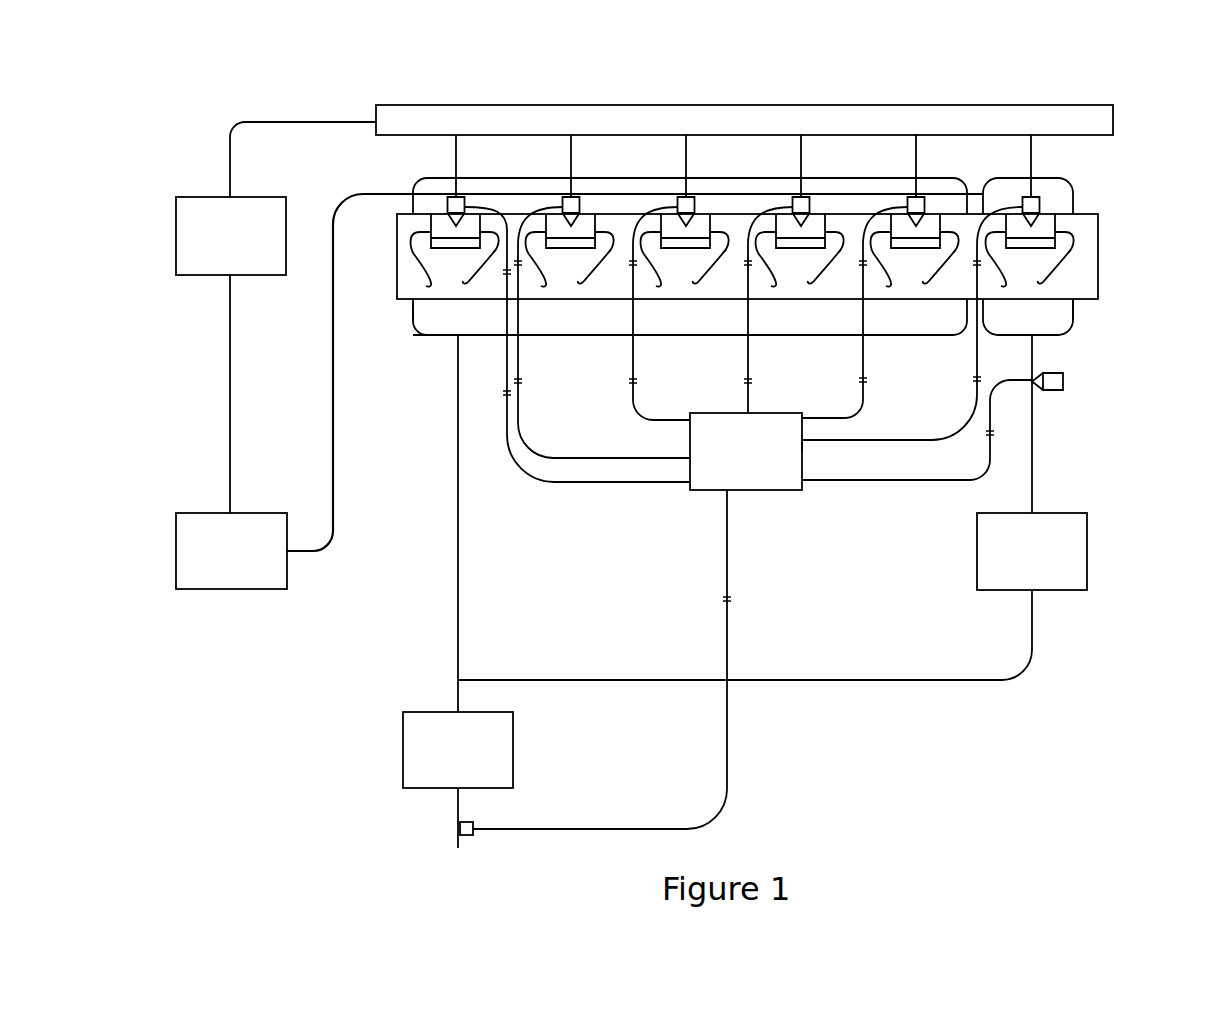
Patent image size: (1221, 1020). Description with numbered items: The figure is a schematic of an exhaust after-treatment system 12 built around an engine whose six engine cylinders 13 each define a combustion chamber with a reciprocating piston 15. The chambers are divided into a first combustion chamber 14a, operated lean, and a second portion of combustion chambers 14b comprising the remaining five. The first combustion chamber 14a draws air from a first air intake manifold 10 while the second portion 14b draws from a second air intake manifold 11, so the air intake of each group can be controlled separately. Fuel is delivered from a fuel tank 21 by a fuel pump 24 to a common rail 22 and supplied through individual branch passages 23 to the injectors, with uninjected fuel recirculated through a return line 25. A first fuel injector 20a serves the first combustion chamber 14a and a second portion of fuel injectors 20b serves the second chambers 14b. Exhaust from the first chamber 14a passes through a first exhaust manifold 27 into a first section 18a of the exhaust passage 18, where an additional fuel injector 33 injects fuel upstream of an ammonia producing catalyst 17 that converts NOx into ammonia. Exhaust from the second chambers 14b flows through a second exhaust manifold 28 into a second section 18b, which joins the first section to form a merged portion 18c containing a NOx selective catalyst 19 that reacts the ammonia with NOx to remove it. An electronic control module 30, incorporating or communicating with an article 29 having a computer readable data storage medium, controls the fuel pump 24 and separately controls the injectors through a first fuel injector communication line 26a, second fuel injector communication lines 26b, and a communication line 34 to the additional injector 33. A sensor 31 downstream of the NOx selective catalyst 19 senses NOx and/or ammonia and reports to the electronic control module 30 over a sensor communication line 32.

The first air intake manifold 10 is at (1073, 205).
The second air intake manifold 11 is at (413, 192).
The exhaust after-treatment system 12 is at (1116, 72).
The engine cylinder 13 is at (705, 264).
The first combustion chamber 14a is at (1057, 264).
The second portion of combustion chambers 14b is at (713, 264).
The piston 15 is at (743, 245).
The ammonia producing catalyst 17 is at (1087, 535).
The exhaust passage 18 is at (800, 680).
The first section of the exhaust passage 18a is at (1032, 430).
The second section of the exhaust passage 18b is at (458, 505).
The merged portion of the exhaust passage 18c is at (458, 700).
The NOx selective catalyst 19 is at (513, 733).
The first fuel injector 20a is at (1023, 200).
The second portion of fuel injectors 20b is at (465, 200).
The fuel tank 21 is at (287, 573).
The common rail 22 is at (720, 105).
The branch passages 23 is at (456, 172).
The fuel pump 24 is at (176, 210).
The return line 25 is at (333, 400).
The first fuel injector communication line 26a is at (900, 439).
The second fuel injector communication line 26b is at (507, 345).
The first exhaust manifold 27 is at (1067, 333).
The second exhaust manifold 28 is at (430, 338).
The article with a computer readable data storage medium 29 is at (802, 445).
The electronic control module 30 is at (773, 490).
The sensor 31 is at (475, 835).
The sensor communication line 32 is at (727, 548).
The additional fuel injector 33 is at (1063, 382).
The communication line 34 is at (897, 480).